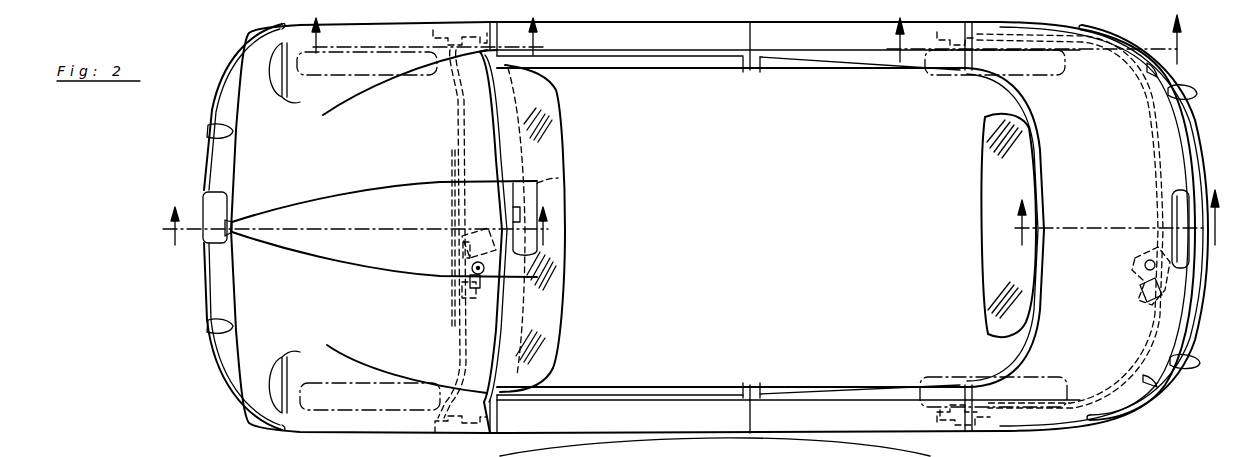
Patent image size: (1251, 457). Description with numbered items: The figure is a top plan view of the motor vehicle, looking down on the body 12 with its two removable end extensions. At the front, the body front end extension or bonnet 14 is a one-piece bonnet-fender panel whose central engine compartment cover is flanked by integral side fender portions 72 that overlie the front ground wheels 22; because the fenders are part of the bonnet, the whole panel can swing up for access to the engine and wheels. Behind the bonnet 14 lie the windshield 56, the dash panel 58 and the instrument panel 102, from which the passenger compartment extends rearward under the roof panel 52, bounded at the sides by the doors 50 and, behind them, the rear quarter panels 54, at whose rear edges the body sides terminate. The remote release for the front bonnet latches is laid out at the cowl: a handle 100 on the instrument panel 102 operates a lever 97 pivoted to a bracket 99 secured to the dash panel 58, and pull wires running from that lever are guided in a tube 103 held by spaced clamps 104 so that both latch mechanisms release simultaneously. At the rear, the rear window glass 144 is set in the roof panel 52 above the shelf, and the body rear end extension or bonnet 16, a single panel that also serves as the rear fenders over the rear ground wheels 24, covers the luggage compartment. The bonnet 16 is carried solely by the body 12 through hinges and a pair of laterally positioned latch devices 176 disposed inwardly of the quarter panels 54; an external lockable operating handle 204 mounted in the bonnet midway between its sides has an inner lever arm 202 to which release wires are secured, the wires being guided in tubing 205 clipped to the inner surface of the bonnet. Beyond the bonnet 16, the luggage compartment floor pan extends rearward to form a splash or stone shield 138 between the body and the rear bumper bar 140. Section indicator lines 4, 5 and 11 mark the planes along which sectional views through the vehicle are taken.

The section line 4- 4 is at (427, 37).
The section line 5- 5 is at (352, 226).
The section line 11- 11 is at (1118, 217).
The body 12 is at (533, 430).
The body front end extension or bonnet 14 is at (345, 440).
The body rear end extension or bonnet 16 is at (1065, 390).
The front ground wheels 22 is at (337, 80).
The rear ground wheels 24 is at (1047, 78).
The doors 50 is at (615, 428).
The roof panel 52 is at (770, 236).
The rear quarter panels 54 is at (880, 425).
The windshield 56 is at (550, 316).
The dash panel 58 is at (452, 316).
The side fender portions 72 is at (388, 420).
The lever 97 is at (480, 291).
The bracket 99 is at (470, 268).
The handle 100 is at (551, 214).
The instrument panel 102 is at (515, 144).
The tube 103 is at (456, 120).
The clamps 104 is at (463, 248).
The rear splash or stone shield 138 is at (1182, 137).
The rear bumper bar 140 is at (1196, 370).
The rear window glass 144 is at (988, 276).
The latch devices 176 is at (972, 405).
The inner lever arm 202 is at (1135, 262).
The external lockable operating handle 204 is at (1180, 190).
The tubing 205 is at (1147, 141).